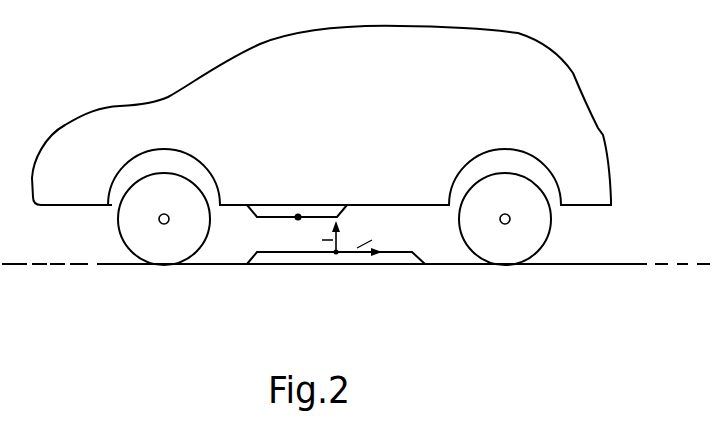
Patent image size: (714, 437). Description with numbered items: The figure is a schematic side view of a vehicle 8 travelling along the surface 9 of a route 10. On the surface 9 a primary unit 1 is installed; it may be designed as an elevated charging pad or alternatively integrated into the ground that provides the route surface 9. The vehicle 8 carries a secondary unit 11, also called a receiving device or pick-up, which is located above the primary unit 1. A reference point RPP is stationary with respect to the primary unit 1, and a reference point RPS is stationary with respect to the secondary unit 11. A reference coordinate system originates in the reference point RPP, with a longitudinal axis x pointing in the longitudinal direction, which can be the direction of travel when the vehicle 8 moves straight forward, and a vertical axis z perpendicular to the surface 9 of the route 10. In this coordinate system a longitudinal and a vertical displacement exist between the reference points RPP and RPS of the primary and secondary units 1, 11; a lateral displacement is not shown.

The primary unit 1 is at (280, 258).
The vehicle 8 is at (567, 61).
The surface 9 is at (642, 262).
The route 10 is at (622, 262).
The secondary unit 11 is at (330, 207).
The reference point of the secondary unit RPS is at (298, 214).
The reference point of the primary unit RPP is at (336, 254).